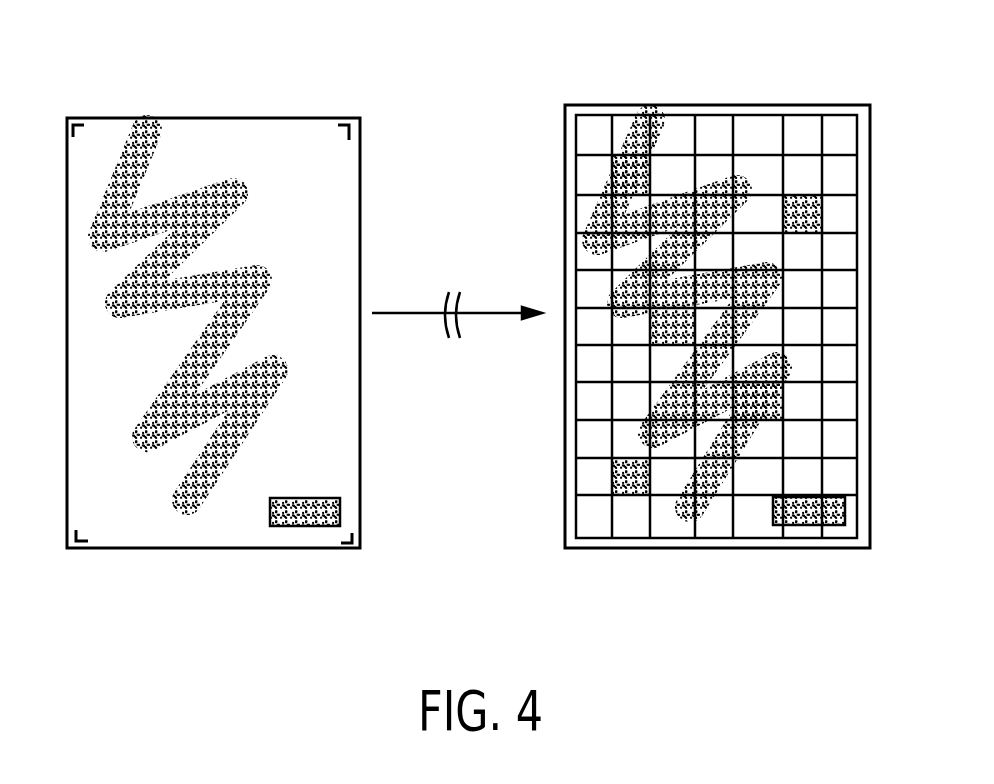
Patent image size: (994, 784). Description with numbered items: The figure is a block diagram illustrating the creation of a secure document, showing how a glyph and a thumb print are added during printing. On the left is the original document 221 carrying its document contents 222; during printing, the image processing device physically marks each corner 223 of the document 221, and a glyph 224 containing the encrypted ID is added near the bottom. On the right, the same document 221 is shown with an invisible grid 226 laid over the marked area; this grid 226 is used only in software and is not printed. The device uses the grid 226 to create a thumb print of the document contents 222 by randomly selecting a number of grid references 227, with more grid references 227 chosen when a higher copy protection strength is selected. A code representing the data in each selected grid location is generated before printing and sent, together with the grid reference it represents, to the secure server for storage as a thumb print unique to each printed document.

The original document 221 is at (261, 89).
The document contents 222 is at (117, 330).
The corner 223 is at (75, 118).
The glyph 224 is at (293, 527).
The grid 226 is at (835, 330).
The grid references 227 is at (625, 160).